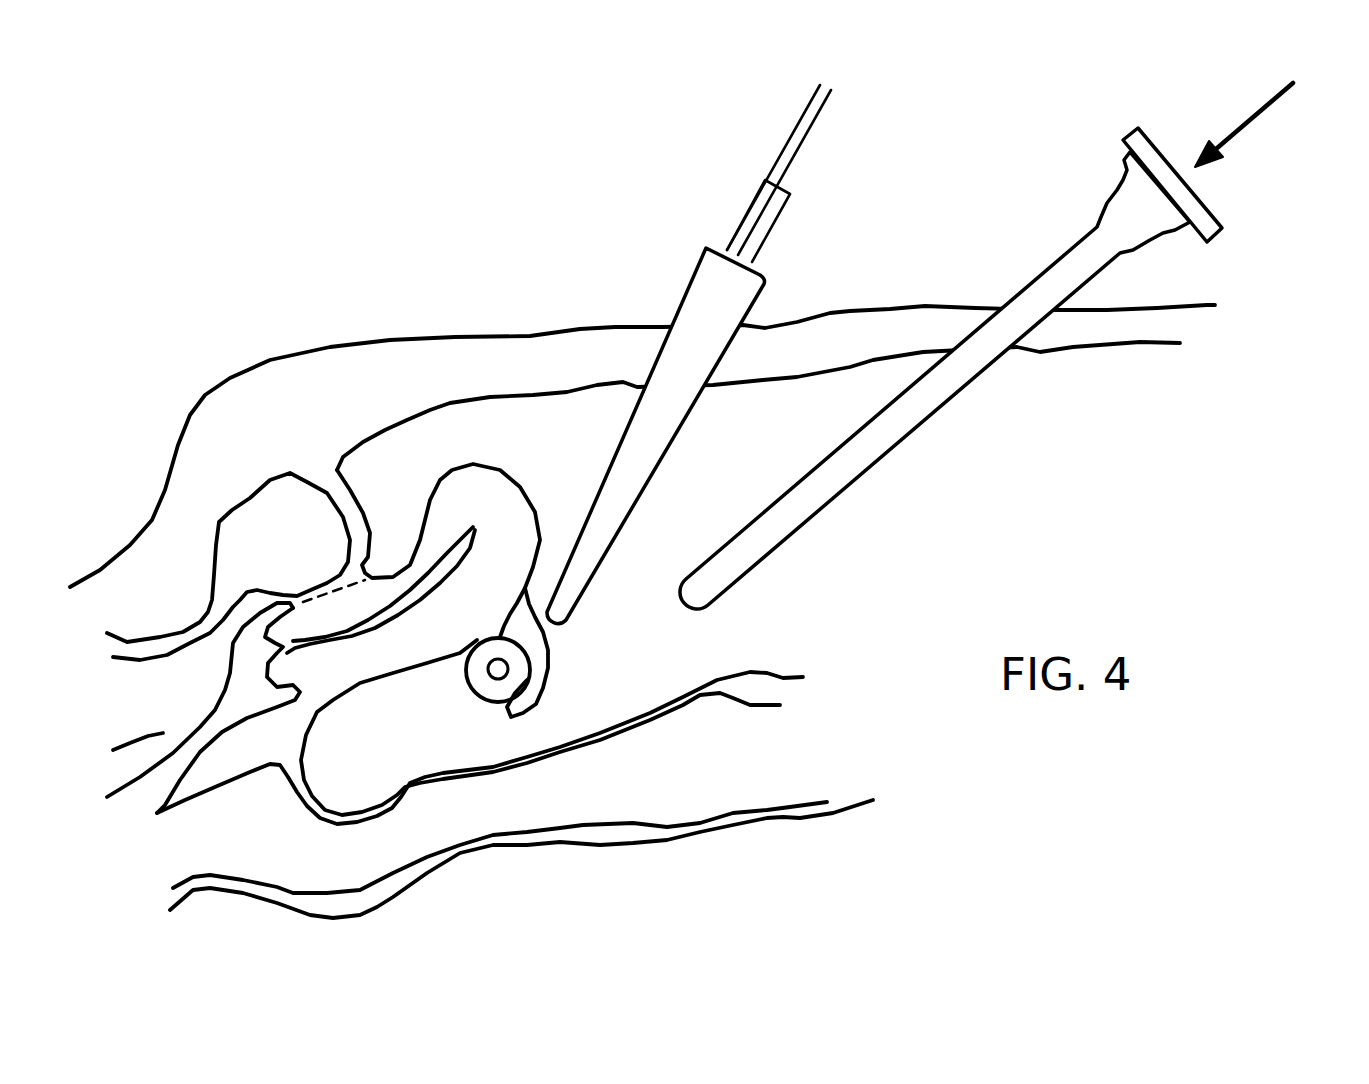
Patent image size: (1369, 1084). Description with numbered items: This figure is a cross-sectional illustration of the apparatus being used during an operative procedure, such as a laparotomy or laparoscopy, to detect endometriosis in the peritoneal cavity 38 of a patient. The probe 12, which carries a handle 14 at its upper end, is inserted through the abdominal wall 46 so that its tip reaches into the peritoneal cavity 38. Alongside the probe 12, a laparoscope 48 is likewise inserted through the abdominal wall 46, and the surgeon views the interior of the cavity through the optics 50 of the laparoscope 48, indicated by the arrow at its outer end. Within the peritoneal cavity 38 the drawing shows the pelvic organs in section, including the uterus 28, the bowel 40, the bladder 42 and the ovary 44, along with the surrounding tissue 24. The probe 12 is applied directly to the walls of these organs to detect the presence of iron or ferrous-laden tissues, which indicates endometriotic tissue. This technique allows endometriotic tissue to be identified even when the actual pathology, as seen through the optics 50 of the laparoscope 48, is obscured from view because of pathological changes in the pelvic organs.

The probe 12 is at (693, 281).
The handle 14 is at (753, 196).
The tissue structure 24 is at (168, 745).
The uterus 28 is at (497, 518).
The peritoneal cavity 38 is at (649, 667).
The bowel 40 is at (348, 875).
The bladder 42 is at (302, 553).
The ovary 44 is at (494, 673).
The abdominal wall 46 is at (885, 335).
The laparoscope 48 is at (916, 427).
The optics 50 is at (1263, 108).